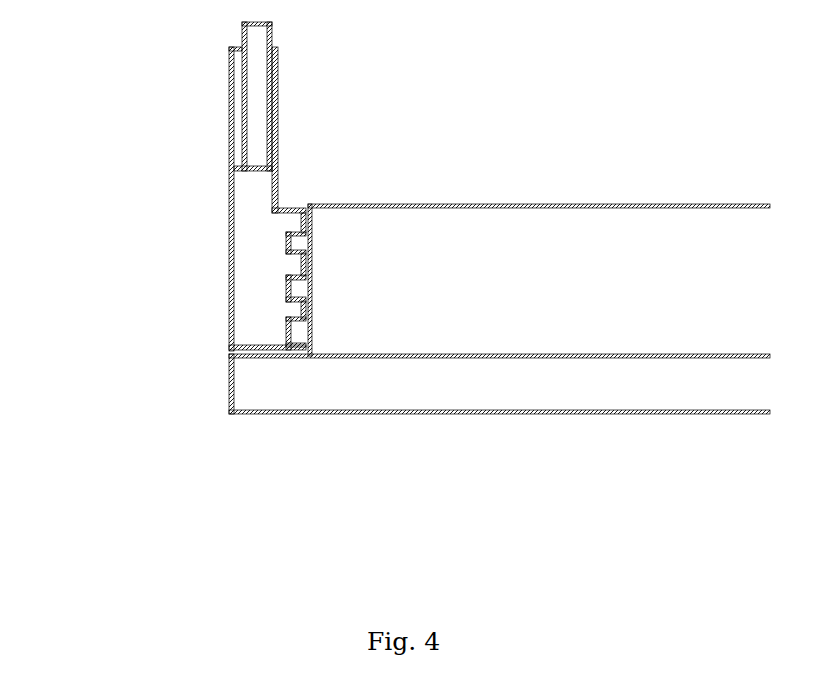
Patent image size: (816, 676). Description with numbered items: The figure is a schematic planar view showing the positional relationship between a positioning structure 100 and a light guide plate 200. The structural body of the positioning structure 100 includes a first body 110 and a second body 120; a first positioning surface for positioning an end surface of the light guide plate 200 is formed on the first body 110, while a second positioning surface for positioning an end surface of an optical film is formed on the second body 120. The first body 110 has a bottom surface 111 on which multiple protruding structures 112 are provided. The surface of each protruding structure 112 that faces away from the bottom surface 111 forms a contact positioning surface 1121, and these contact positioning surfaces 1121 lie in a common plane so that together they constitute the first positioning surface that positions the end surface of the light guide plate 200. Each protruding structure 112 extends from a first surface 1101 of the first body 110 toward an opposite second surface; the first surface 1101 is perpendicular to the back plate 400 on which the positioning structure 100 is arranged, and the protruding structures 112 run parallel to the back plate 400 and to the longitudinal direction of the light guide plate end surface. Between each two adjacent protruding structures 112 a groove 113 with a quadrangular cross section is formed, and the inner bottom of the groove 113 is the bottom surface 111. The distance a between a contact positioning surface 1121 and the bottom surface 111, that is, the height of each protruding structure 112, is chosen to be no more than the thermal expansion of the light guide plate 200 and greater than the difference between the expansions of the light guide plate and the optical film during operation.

The positioning structure 100 is at (222, 265).
The first body 110 is at (247, 225).
The first surface 1101 is at (257, 203).
The bottom surface 111 is at (300, 313).
The protruding structure 112 is at (284, 338).
The contact positioning surface 1121 is at (308, 257).
The groove 113 is at (294, 290).
The second body 120 is at (255, 110).
The light guide plate 200 is at (571, 335).
The back plate 400 is at (321, 395).
The distance a is at (302, 244).